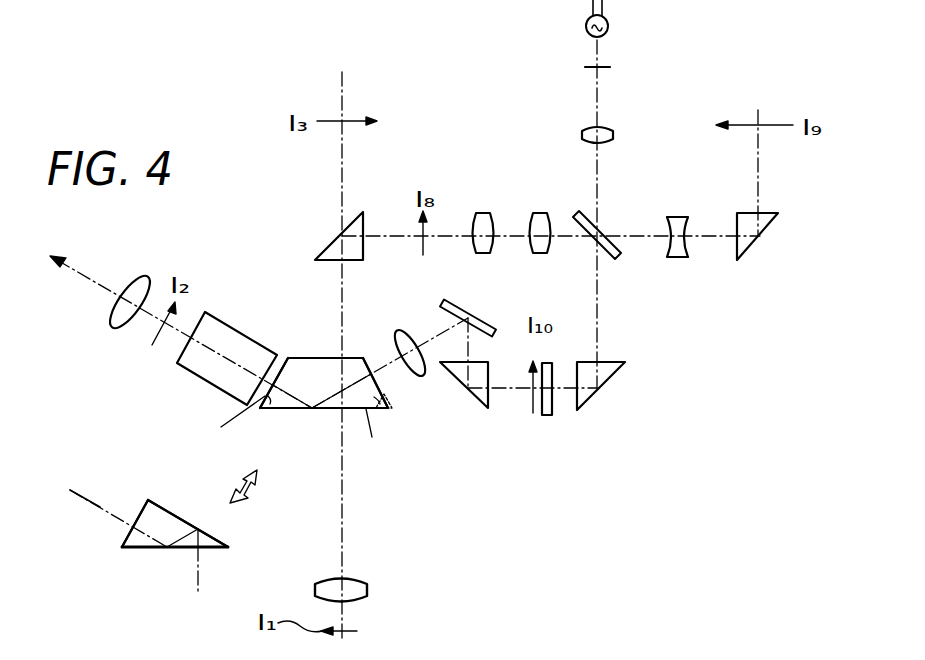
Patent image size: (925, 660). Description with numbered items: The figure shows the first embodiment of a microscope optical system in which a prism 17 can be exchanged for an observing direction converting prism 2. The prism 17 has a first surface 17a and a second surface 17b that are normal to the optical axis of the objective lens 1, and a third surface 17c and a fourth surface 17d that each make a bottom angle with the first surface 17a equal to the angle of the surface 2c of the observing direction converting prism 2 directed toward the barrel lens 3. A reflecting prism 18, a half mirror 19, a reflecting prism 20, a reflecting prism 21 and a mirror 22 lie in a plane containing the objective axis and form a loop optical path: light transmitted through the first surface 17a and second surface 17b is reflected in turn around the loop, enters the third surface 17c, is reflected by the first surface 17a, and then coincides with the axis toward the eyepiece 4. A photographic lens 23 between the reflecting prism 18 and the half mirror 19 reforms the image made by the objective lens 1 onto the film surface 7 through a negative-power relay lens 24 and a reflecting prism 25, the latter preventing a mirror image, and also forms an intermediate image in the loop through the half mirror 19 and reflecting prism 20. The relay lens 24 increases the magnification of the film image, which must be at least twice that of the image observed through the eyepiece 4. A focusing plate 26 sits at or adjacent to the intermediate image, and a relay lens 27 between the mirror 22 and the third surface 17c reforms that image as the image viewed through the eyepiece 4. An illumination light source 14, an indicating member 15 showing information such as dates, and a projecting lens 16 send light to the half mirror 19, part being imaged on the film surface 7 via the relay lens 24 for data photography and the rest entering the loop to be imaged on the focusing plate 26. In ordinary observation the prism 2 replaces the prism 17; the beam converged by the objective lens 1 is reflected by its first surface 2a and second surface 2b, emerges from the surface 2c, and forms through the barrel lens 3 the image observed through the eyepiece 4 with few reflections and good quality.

The objective lens 1 is at (366, 581).
The observing direction converting prism 2 is at (122, 543).
The first surface 2a is at (168, 507).
The second surface 2b is at (140, 549).
The surface 2c is at (137, 515).
The barrel lens 3 is at (200, 366).
The eyepiece 4 is at (147, 277).
The film surface 7 is at (777, 114).
The illumination light source 14 is at (622, 19).
The indicating member 15 is at (611, 66).
The projecting lens 16 is at (612, 132).
The prism 17 is at (285, 407).
The first surface 17a is at (300, 409).
The second surface 17b is at (305, 357).
The third surface 17c is at (382, 395).
The fourth surface 17d is at (278, 377).
The reflecting prism 18 is at (355, 220).
The half mirror 19 is at (582, 214).
The reflecting prism 20 is at (618, 370).
The reflecting prism 21 is at (480, 408).
The mirror 22 is at (457, 303).
The photographic lens 23 is at (553, 210).
The relay lens 24 is at (675, 218).
The reflecting prism 25 is at (776, 219).
The focusing plate 26 is at (553, 416).
The relay lens 27 is at (400, 333).